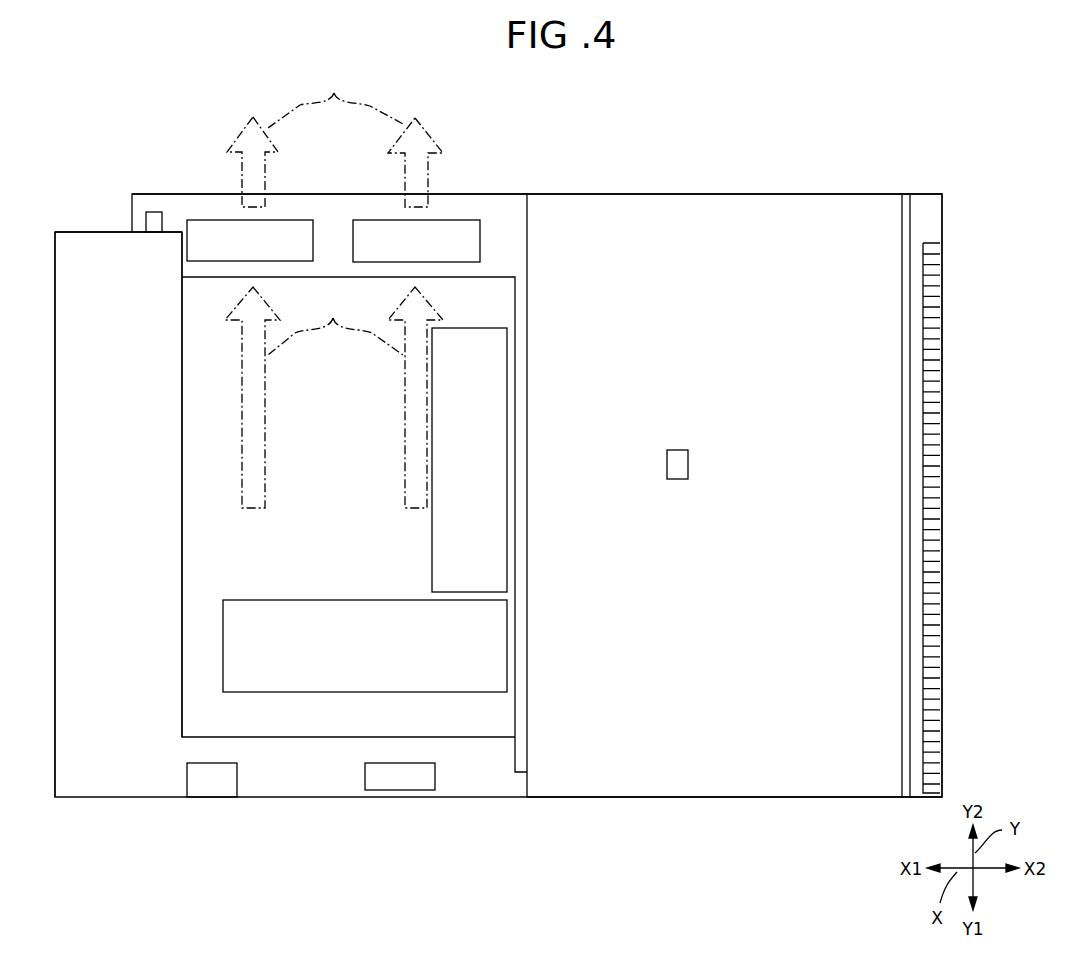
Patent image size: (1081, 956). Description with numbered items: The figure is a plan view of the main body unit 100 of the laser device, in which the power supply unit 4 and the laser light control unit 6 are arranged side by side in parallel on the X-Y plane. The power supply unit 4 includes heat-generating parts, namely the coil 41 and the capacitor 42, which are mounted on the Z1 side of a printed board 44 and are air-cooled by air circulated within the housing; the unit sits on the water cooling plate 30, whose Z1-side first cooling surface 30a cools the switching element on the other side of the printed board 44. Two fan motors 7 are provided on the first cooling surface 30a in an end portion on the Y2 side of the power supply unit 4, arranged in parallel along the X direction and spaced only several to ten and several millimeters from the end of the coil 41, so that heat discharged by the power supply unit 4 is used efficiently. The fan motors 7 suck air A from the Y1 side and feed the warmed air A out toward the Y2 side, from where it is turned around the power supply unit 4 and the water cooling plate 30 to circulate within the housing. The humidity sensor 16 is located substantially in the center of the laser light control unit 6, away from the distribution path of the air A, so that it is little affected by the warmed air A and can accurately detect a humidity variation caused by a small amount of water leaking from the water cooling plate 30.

The water cooling plate 30 is at (155, 188).
The first cooling surface 30a is at (462, 210).
The fan motor 7 is at (194, 221).
The power supply unit 4 is at (278, 762).
The coil 41 is at (490, 327).
The capacitor 42 is at (357, 693).
The printed board 44 is at (470, 705).
The laser light control unit 6 is at (607, 742).
The humidity sensor 16 is at (673, 480).
The main body unit 100 is at (920, 372).
The air A is at (334, 289).